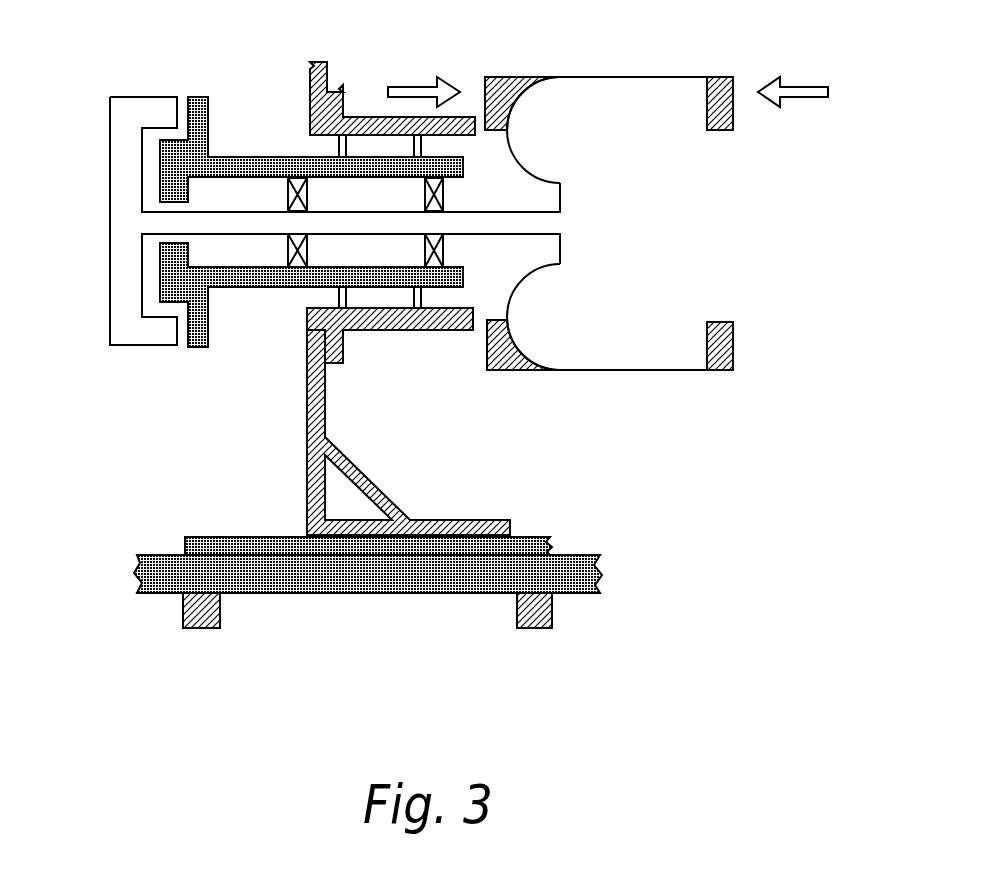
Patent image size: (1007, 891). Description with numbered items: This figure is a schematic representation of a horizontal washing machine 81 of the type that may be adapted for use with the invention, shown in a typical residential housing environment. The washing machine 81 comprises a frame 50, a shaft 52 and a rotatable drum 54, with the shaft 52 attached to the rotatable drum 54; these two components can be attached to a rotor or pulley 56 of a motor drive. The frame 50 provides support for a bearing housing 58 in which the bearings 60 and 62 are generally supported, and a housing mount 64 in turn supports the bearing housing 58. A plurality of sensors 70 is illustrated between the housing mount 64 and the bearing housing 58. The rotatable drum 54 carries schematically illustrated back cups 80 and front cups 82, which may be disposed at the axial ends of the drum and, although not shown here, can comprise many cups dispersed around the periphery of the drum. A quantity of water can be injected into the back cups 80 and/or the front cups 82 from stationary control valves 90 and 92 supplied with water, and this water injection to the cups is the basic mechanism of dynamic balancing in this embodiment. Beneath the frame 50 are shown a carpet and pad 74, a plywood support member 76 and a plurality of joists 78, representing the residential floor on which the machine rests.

The frame 50 is at (308, 400).
The shaft 52 is at (518, 222).
The rotatable drum 54 is at (660, 372).
The rotor or pulley 56 is at (122, 223).
The bearing housing 58 is at (205, 348).
The bearing 60 is at (288, 188).
The bearing 62 is at (425, 192).
The housing mount 64 is at (362, 117).
The sensors 70 is at (336, 146).
The carpet and pad 74 is at (245, 537).
The plywood support member 76 is at (160, 555).
The joists 78 is at (205, 630).
The back cups 80 is at (490, 350).
The washing machine 81 is at (193, 56).
The front cups 82 is at (733, 352).
The stationary control valve 90 is at (445, 77).
The stationary control valve 92 is at (768, 78).